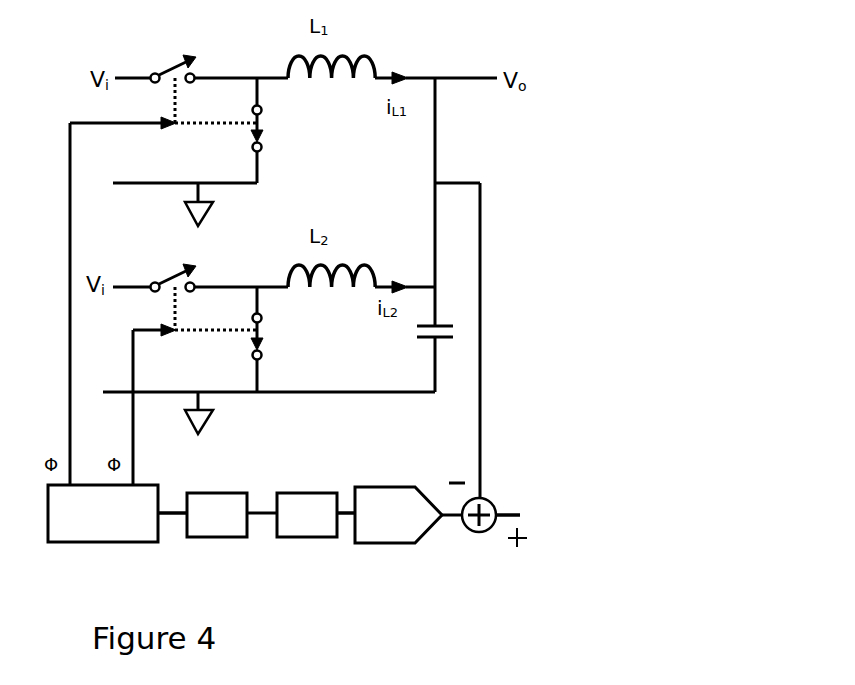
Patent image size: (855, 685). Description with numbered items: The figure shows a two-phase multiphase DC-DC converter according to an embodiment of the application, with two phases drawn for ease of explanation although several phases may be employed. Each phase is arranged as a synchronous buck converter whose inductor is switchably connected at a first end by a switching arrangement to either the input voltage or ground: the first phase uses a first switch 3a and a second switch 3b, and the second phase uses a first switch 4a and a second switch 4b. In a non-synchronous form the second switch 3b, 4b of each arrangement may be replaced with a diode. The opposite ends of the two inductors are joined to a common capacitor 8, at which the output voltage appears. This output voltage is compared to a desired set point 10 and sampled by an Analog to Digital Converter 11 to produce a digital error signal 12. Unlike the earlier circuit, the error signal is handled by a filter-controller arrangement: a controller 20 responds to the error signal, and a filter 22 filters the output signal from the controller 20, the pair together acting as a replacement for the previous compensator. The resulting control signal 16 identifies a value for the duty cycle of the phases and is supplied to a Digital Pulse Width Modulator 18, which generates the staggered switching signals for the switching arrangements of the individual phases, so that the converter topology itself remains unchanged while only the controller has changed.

The first switch of first switching arrangement 3a is at (173, 57).
The second switch of first switching arrangement 3b is at (264, 121).
The first switch of second switching arrangement 4a is at (173, 268).
The second switch of second switching arrangement 4b is at (264, 331).
The common capacitor 8 is at (420, 338).
The desired set point 10 is at (510, 513).
The Analog to Digital Converter 11 is at (398, 515).
The digital error signal 12 is at (347, 511).
The control signal 16 is at (167, 505).
The Digital Pulse Width Modulator 18 is at (103, 513).
The controller 20 is at (307, 515).
The filter 22 is at (217, 515).